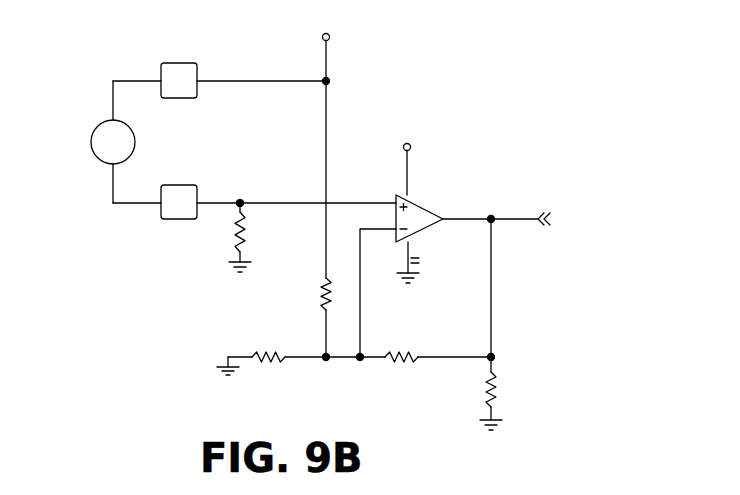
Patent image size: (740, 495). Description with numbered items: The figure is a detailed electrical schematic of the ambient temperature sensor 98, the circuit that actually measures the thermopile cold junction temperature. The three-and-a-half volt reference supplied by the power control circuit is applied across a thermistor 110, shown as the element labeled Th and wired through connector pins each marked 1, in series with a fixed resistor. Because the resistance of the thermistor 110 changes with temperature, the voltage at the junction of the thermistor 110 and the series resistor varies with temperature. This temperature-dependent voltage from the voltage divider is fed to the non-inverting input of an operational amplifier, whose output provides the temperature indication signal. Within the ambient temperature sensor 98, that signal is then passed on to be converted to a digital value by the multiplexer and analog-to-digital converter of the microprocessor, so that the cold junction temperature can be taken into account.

The ambient temperature sensor 98 is at (481, 146).
The thermistor 110 is at (96, 158).
The connector pin 1 is at (179, 128).